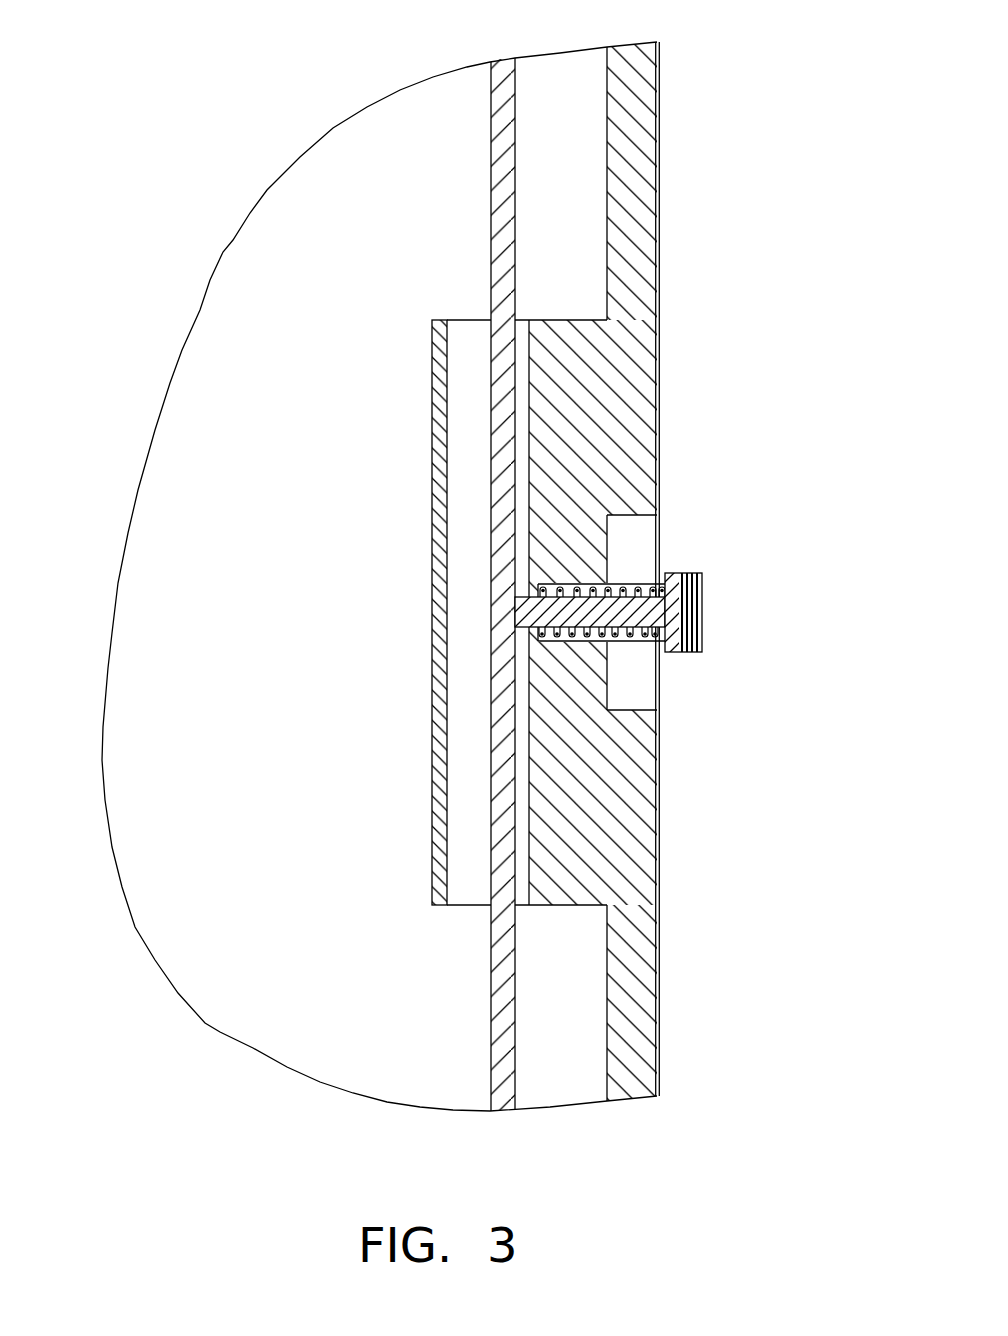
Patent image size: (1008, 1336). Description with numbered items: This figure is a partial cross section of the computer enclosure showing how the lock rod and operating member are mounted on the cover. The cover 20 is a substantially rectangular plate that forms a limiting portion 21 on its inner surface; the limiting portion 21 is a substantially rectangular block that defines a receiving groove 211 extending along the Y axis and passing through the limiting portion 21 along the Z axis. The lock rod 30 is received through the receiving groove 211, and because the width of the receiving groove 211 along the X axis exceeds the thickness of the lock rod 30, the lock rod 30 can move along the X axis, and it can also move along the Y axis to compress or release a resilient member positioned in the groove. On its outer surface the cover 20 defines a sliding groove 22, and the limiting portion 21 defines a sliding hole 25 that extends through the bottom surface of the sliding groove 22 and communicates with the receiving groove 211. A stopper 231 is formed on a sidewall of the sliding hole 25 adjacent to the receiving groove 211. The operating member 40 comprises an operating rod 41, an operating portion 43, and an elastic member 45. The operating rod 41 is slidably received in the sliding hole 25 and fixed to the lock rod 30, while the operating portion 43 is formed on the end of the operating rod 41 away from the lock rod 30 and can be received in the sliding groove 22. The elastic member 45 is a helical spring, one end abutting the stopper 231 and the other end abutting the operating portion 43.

The cover 20 is at (638, 182).
The limiting portion 21 is at (597, 367).
The receiving groove 211 is at (465, 335).
The sliding groove 22 is at (640, 530).
The stopper 231 is at (535, 589).
The sliding hole 25 is at (598, 640).
The lock rod 30 is at (503, 168).
The operating member 40 is at (691, 578).
The operating rod 41 is at (656, 570).
The operating portion 43 is at (731, 612).
The elastic member 45 is at (665, 590).